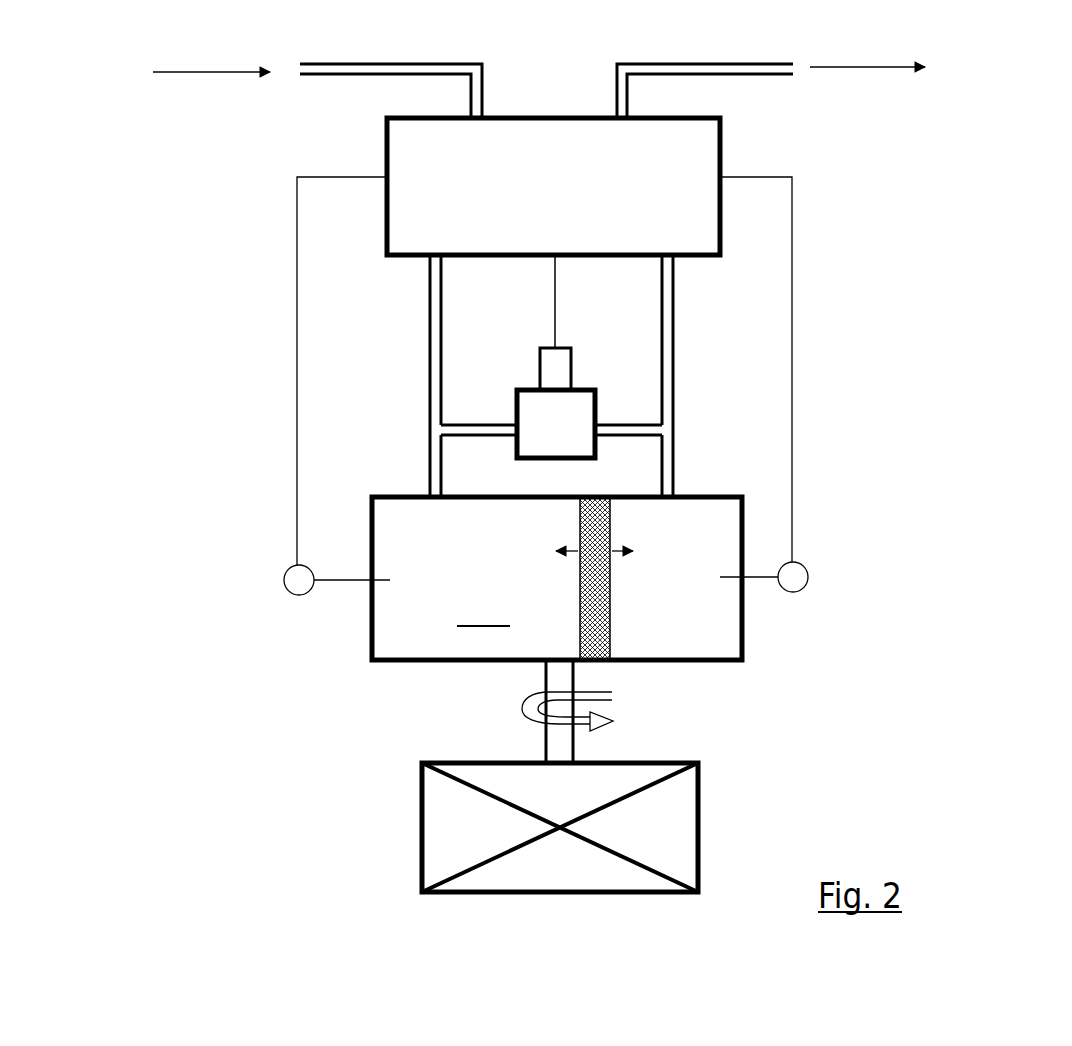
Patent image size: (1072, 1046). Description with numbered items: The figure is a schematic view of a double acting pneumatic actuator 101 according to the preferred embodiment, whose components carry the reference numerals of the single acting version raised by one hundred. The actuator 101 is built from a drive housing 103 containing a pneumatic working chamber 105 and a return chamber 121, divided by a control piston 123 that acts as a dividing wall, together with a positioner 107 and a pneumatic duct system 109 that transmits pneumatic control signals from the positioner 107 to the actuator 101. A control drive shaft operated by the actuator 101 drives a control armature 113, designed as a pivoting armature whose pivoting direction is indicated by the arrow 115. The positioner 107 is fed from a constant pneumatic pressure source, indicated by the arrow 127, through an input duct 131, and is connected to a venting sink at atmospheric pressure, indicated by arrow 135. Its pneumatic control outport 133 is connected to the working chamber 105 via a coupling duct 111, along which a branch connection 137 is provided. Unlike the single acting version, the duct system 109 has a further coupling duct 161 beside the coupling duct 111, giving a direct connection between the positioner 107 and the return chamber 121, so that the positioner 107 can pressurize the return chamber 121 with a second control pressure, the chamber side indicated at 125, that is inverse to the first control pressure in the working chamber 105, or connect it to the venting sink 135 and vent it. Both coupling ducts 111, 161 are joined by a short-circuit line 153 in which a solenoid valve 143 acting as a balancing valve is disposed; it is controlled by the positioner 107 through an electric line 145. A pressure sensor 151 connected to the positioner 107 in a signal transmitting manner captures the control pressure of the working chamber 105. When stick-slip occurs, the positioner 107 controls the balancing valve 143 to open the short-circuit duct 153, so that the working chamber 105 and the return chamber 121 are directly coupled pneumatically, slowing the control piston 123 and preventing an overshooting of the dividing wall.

The double action pneumatic actuator 101 is at (902, 213).
The drive housing 103 is at (372, 660).
The pneumatic working chamber 105 is at (557, 578).
The positioner 107 is at (720, 135).
The pneumatic duct system 109 is at (325, 495).
The coupling duct 111 is at (433, 340).
The control armature 113 is at (698, 810).
The arrow 115 is at (603, 717).
The return chamber 121 is at (713, 638).
The control piston 123 is at (597, 632).
The second pressure side 125 is at (713, 525).
The pneumatic pressure source 127 is at (192, 72).
The input duct 131 is at (334, 64).
The pneumatic control outport 133 is at (435, 255).
The venting sink 135 is at (868, 67).
The branch connection 137 is at (438, 430).
The solenoid valve 143 is at (562, 427).
The electric line 145 is at (557, 292).
The pressure sensor 151 is at (297, 583).
The short-circuit line 153 is at (630, 428).
The further coupling duct 161 is at (667, 350).